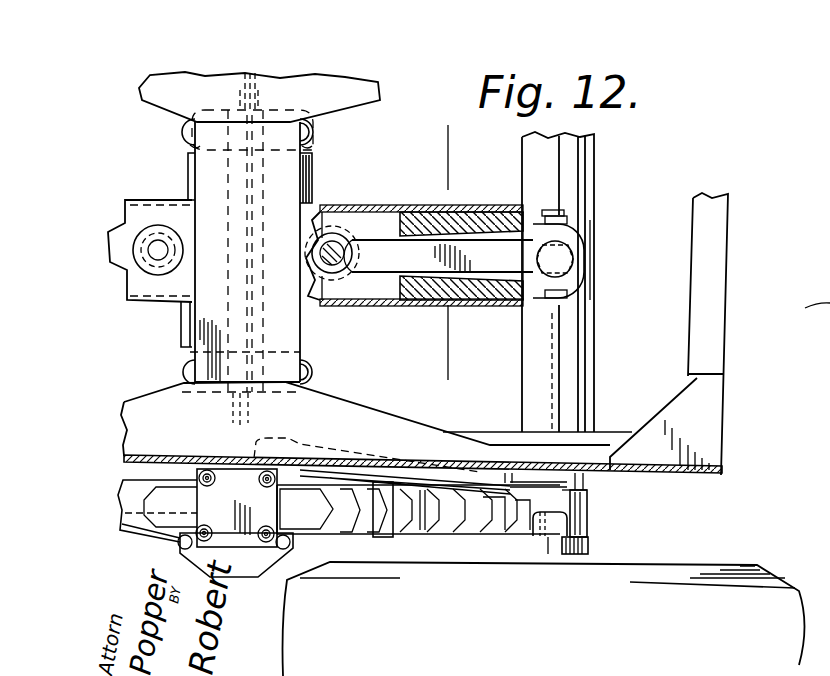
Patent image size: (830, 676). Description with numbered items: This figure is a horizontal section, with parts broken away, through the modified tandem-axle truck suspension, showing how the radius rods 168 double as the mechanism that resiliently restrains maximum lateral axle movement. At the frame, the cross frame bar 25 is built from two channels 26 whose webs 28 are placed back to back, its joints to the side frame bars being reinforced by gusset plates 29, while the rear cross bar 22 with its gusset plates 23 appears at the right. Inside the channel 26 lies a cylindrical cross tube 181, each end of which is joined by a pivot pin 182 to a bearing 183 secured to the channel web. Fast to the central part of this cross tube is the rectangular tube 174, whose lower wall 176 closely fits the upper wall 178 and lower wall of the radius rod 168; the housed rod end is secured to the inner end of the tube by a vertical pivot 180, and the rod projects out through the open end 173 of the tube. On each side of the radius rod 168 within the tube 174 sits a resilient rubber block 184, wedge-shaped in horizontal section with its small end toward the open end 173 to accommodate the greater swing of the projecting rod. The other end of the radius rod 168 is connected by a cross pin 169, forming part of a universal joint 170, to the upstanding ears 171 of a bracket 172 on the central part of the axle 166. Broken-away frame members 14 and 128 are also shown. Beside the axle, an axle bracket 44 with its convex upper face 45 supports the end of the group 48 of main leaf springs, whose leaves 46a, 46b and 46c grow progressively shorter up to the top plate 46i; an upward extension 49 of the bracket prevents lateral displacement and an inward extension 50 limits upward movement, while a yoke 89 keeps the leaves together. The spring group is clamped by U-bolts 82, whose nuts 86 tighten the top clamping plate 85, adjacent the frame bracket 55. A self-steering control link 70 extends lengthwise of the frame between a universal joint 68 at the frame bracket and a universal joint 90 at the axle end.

The gusset plate 29 is at (153, 100).
The channel 26 is at (195, 330).
The cross frame bar 25 is at (310, 355).
The web 28 is at (235, 423).
The bearing 183 is at (186, 121).
The pivot pin 182 is at (192, 145).
The cylindrical cross tube 181 is at (188, 158).
The vertical pivot 180 is at (157, 240).
The radius rod 168 is at (316, 264).
The upper wall of radius rod 178 is at (392, 240).
The lower wall of tube 176 is at (421, 255).
The resilient rubber block 184 is at (478, 213).
The tube 174 is at (491, 316).
The open end of tube 173 is at (529, 300).
The frame 14 is at (444, 255).
The bracket 172 is at (590, 291).
The universal joint 170 is at (598, 268).
The upstanding ear 171 is at (572, 224).
The cross pin 169 is at (560, 213).
The axle 166 is at (598, 395).
The rear cross bar 22 is at (717, 226).
The gusset plate 23 is at (714, 392).
The universal joint 90 is at (540, 475).
The universal joint 68 is at (298, 436).
The self-steering control link 70 is at (451, 471).
The U-bolt 82 is at (208, 468).
The nut 86 is at (266, 524).
The top clamping plate 85 is at (235, 550).
The frame bracket 55 is at (226, 582).
The top plate 46i is at (418, 509).
The yoke 89 is at (385, 538).
The group of main leaf springs 48 is at (448, 542).
The leaf 46c is at (490, 535).
The leaf 46b is at (506, 536).
The inward extension 50 is at (541, 538).
The upper face of axle bracket 45 is at (588, 517).
The leaf 46a is at (588, 498).
The axle bracket 44 is at (591, 557).
The upward extension 49 is at (559, 554).
The base 128 is at (804, 632).